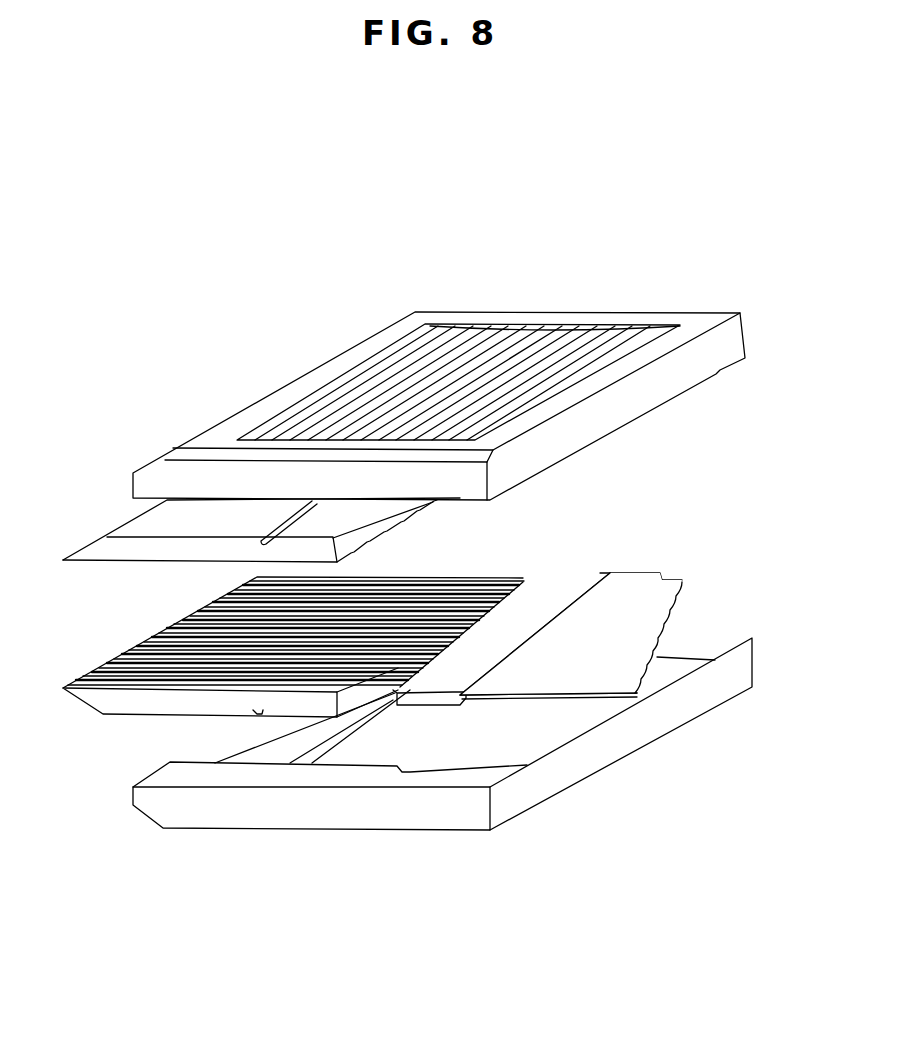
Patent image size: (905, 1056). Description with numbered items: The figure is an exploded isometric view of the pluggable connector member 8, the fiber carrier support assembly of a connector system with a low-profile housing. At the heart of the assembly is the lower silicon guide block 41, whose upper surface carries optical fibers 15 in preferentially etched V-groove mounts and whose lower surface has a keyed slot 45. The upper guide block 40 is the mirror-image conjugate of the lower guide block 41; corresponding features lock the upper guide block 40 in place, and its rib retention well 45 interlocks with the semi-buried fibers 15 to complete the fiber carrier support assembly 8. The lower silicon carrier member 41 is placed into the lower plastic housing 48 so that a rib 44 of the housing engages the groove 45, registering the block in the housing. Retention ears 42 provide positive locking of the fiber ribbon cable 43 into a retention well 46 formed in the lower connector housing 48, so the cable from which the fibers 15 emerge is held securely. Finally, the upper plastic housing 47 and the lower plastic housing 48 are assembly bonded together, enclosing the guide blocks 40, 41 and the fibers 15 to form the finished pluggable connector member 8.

The pluggable connector member 8 is at (298, 343).
The optical fibers 15 is at (128, 652).
The upper guide block 40 is at (132, 518).
The lower silicon guide block 41 is at (140, 716).
The retention ears 42 is at (432, 697).
The fiber ribbon cable 43 is at (603, 640).
The rib 44 is at (360, 733).
The keyed slot 45 is at (273, 525).
The retention well 46 is at (455, 767).
The upper plastic housing 47 is at (417, 348).
The lower plastic housing 48 is at (527, 815).